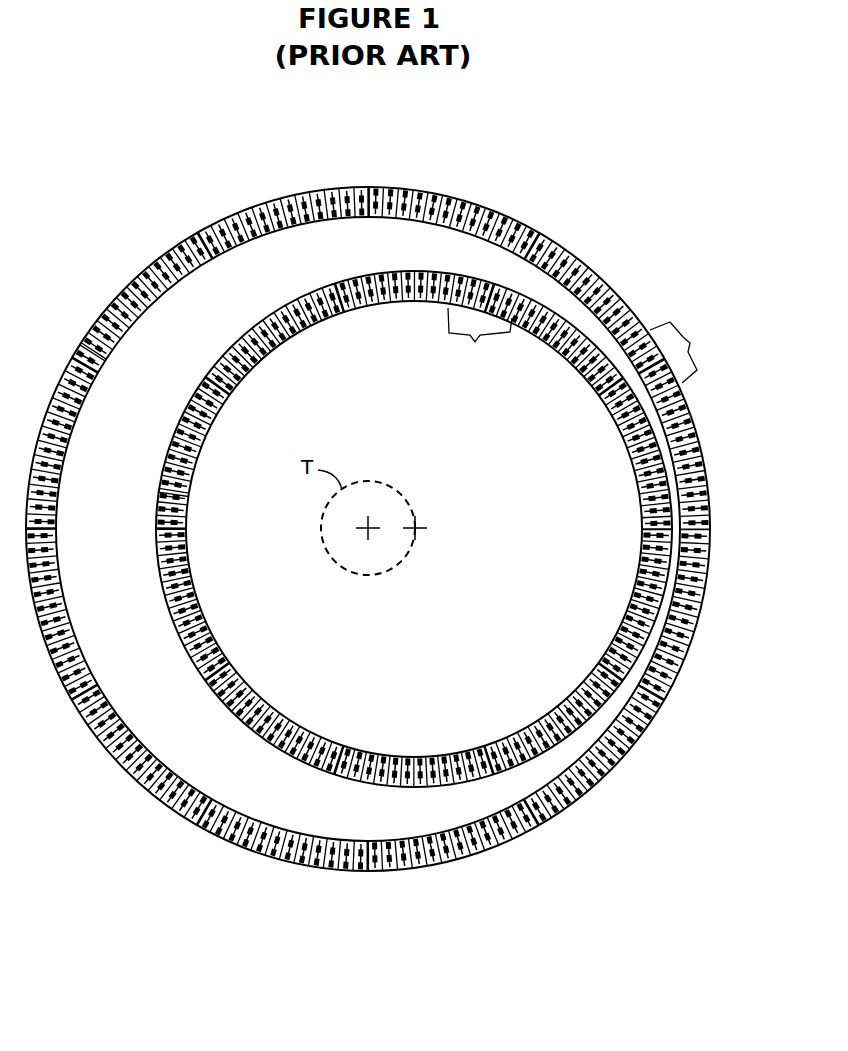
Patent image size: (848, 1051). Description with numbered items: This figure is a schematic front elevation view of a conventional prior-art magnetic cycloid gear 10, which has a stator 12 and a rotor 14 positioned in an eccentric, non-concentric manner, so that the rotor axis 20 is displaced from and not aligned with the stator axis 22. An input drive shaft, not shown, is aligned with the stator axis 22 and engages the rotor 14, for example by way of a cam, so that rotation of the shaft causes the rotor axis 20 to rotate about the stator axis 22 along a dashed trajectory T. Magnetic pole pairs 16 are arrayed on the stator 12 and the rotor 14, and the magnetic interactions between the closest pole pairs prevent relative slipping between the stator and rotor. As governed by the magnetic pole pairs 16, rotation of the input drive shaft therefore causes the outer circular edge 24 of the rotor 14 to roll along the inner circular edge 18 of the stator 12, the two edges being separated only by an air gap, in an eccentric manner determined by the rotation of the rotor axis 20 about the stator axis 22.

The magnetic cycloid gear 10 is at (563, 228).
The stator 12 is at (245, 213).
The rotor 14 is at (245, 338).
The magnetic pole pairs 16 is at (475, 342).
The inner circular edge 18 is at (114, 366).
The rotor axis 20 is at (416, 530).
The stator axis 22 is at (366, 532).
The outer circular edge 24 is at (156, 496).